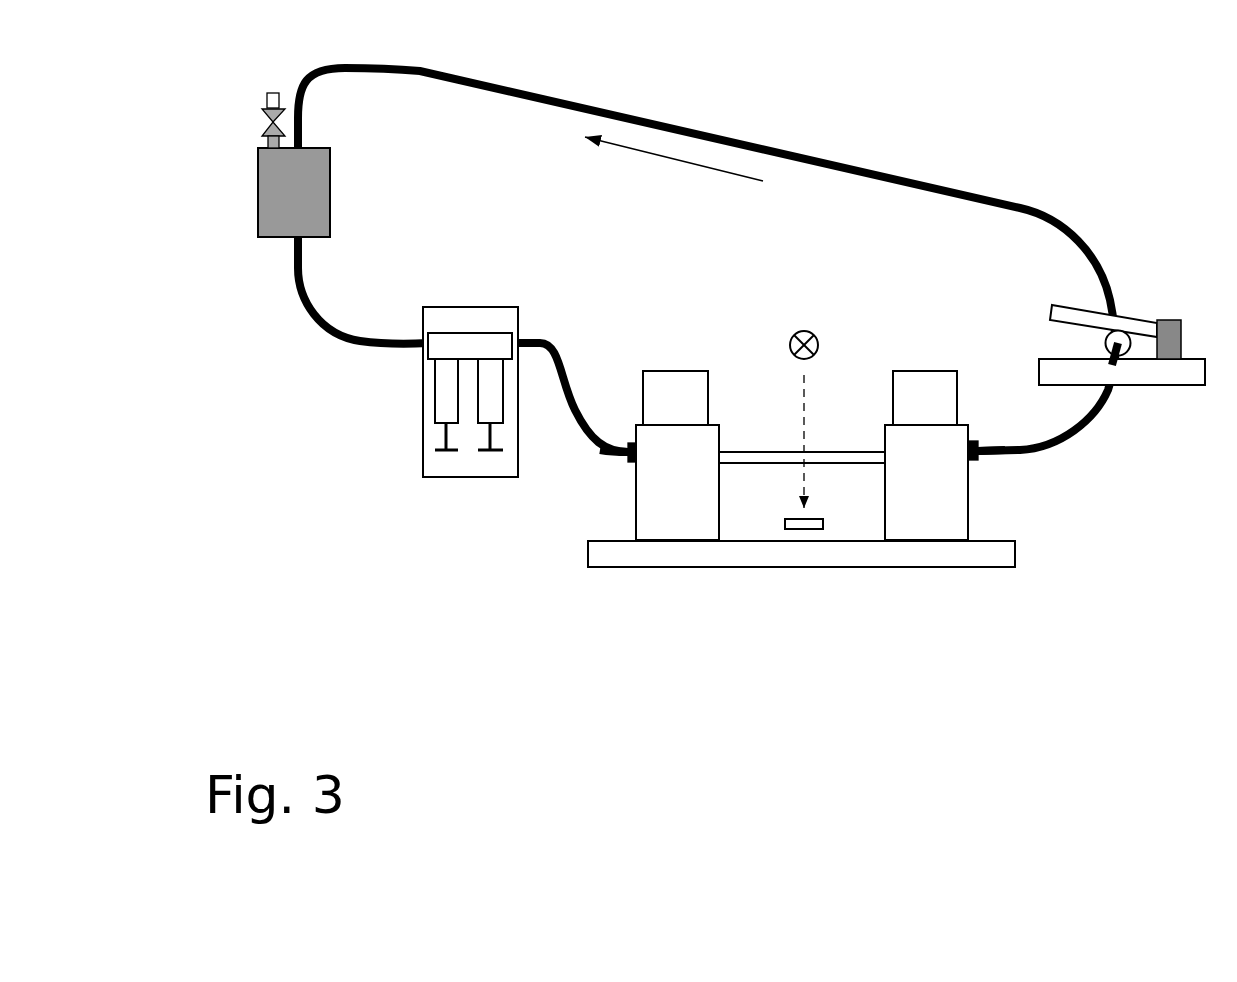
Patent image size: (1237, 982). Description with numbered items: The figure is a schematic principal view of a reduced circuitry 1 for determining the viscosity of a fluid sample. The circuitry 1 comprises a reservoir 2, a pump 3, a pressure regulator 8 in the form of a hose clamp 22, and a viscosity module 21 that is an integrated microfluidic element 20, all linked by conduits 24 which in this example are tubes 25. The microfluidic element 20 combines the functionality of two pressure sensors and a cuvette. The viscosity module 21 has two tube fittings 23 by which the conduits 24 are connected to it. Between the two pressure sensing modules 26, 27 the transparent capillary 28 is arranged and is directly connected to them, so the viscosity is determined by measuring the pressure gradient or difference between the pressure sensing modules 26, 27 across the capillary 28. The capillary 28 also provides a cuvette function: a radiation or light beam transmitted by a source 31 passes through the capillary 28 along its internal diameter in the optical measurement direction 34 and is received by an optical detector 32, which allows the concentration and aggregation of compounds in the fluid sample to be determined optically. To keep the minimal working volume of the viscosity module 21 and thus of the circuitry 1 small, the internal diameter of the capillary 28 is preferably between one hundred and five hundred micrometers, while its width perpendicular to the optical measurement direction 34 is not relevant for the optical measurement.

The reduced circuitry 1 is at (1012, 147).
The reservoir 2 is at (272, 196).
The pump 3 is at (423, 440).
The pressure regulator 8 is at (1172, 295).
The integrated microfluidic element 20 is at (935, 580).
The viscosity module 21 is at (663, 572).
The hose clamp 22 is at (1148, 397).
The tube fittings 23 is at (627, 443).
The conduits 24 is at (562, 377).
The tubes 25 is at (602, 452).
The pressure sensing module 26 is at (660, 380).
The pressure sensing module 27 is at (922, 380).
The transparent capillary 28 is at (843, 455).
The source 31 is at (813, 330).
The optical detector 32 is at (812, 518).
The optical measurement direction 34 is at (802, 432).